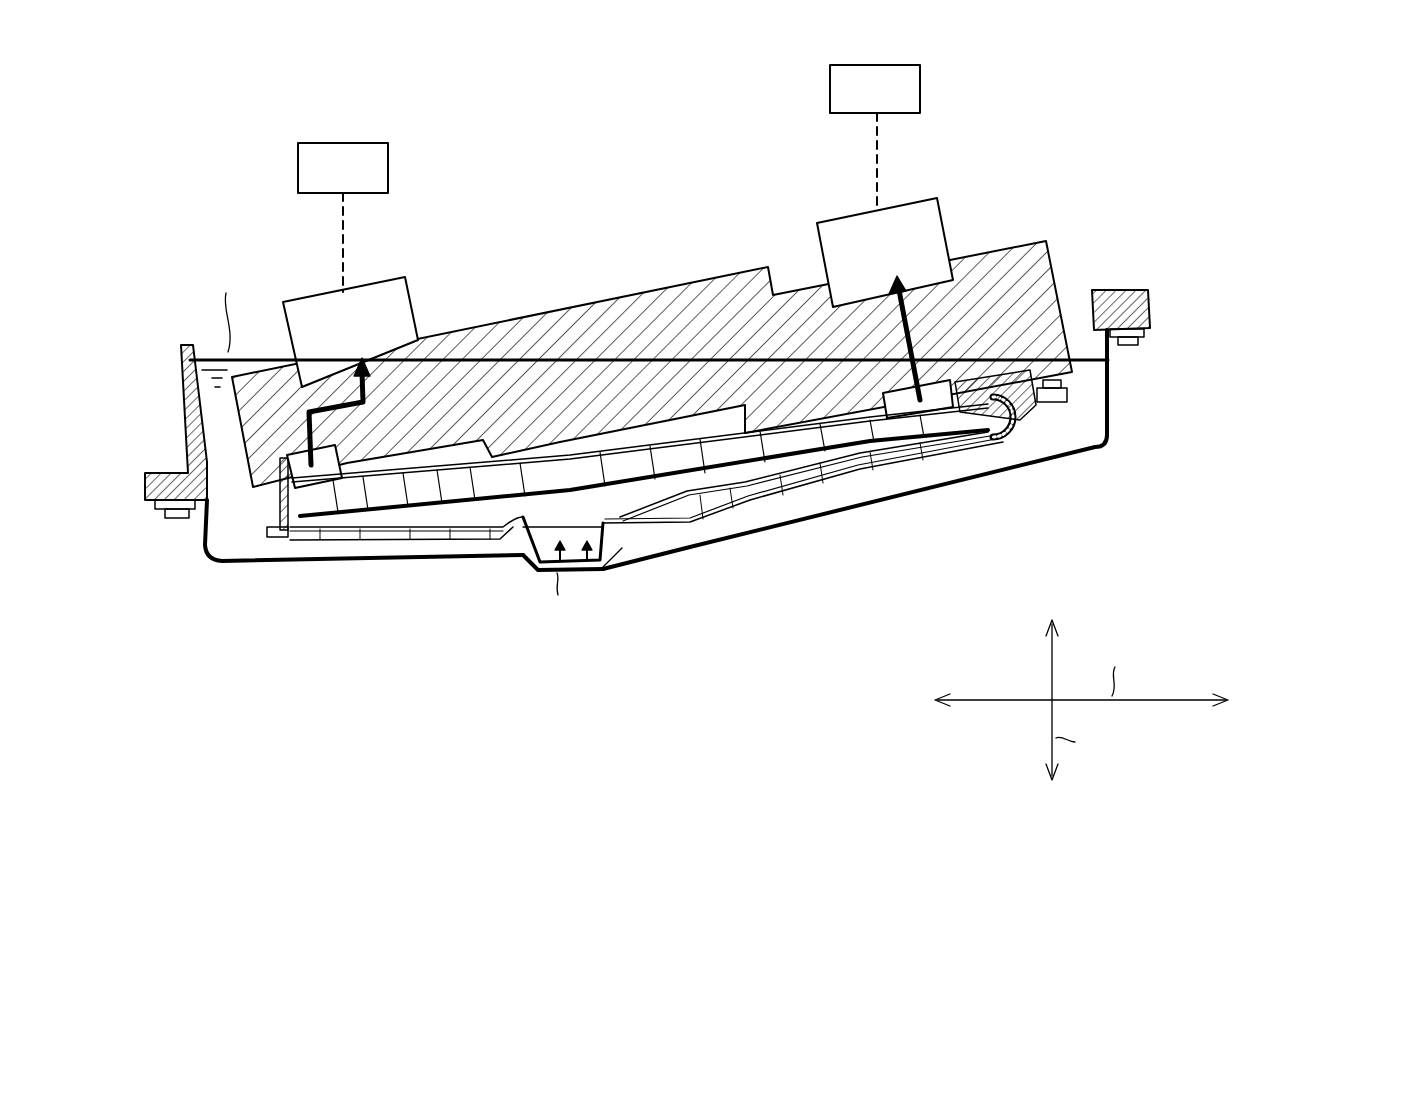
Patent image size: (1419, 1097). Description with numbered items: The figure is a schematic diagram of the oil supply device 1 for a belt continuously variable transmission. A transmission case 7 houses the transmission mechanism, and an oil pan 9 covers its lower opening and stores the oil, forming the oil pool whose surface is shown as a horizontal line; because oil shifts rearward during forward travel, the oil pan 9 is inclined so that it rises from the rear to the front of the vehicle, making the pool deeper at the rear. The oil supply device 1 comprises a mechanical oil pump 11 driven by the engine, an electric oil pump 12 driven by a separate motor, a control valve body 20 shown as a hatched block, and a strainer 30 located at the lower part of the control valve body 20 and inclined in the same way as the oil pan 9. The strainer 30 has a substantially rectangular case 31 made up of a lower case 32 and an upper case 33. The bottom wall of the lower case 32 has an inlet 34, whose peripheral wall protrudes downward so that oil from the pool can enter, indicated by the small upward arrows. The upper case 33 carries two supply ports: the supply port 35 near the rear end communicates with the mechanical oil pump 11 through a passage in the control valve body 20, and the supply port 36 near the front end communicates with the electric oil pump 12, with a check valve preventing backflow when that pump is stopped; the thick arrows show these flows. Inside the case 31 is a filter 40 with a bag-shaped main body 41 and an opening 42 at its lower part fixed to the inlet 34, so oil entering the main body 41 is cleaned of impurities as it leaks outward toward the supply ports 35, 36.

The oil supply device 1 is at (556, 181).
The transmission case 7 is at (182, 356).
The oil pan 9 is at (207, 550).
The mechanical oil pump 11 is at (312, 300).
The electric oil pump 12 is at (836, 236).
The control valve body 20 is at (665, 283).
The strainer 30 is at (975, 452).
The case 31 is at (1160, 368).
The lower case 32 is at (1047, 416).
The upper case 33 is at (1047, 401).
The inlet 34 is at (614, 551).
The supply port 35 is at (287, 462).
The supply port 36 is at (958, 370).
The filter 40 is at (545, 406).
The main body 41 is at (481, 480).
The opening 42 is at (536, 524).